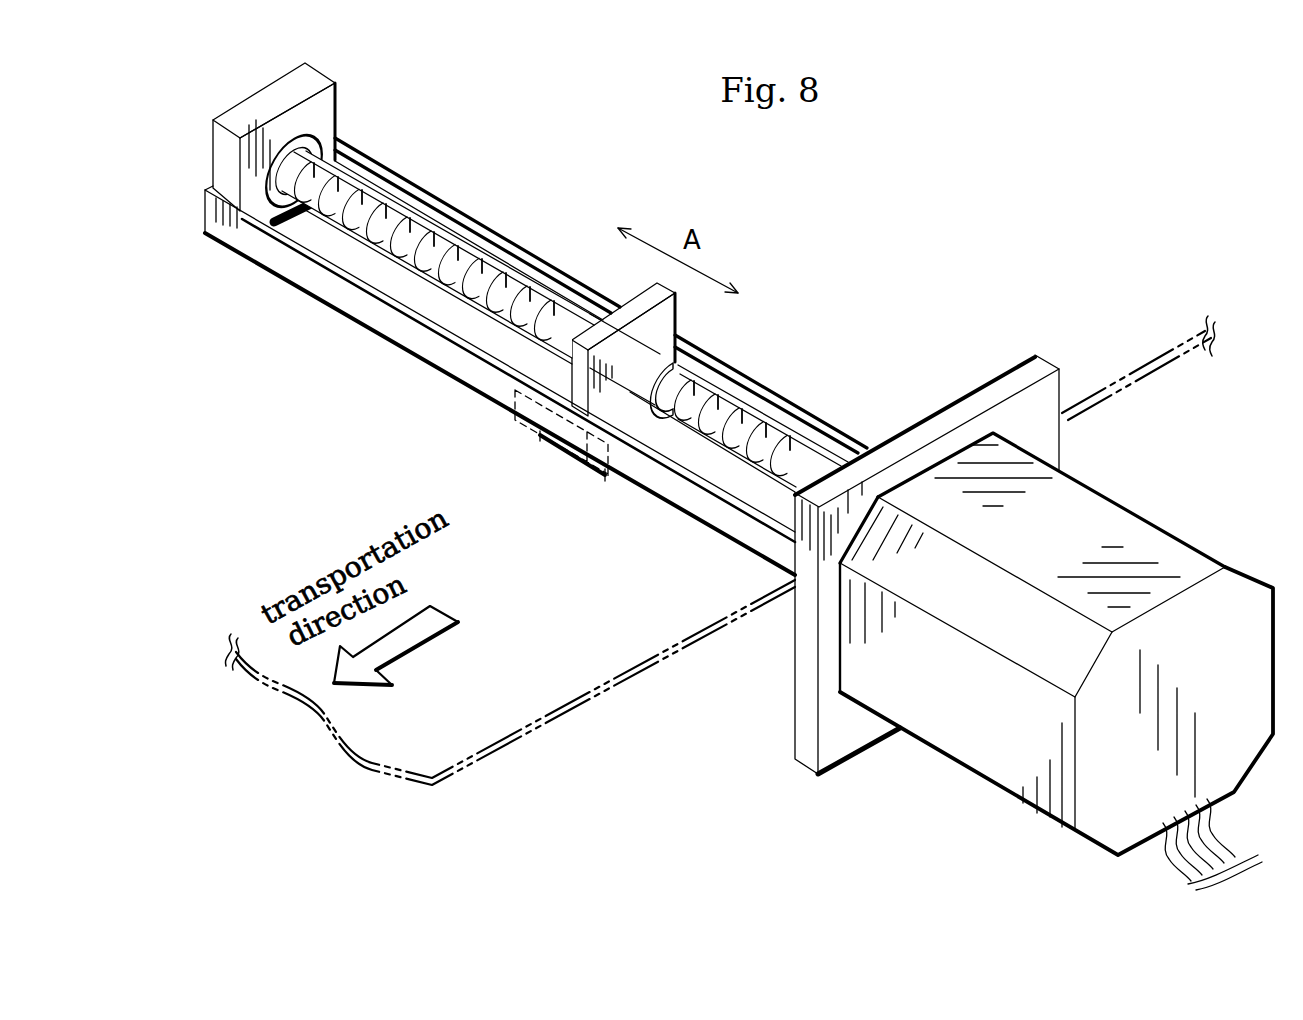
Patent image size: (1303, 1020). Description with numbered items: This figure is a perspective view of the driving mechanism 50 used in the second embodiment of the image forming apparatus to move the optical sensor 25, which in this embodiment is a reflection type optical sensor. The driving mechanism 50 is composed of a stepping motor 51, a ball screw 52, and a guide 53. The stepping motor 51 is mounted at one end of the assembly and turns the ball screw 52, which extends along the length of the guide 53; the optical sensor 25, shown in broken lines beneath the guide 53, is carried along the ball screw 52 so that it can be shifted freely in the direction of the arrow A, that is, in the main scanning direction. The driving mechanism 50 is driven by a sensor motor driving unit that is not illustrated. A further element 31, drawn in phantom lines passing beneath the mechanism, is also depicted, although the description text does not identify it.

The optical sensor 25 is at (585, 478).
The recording sheet 31 is at (567, 663).
The driving mechanism 50 is at (557, 175).
The stepping motor 51 is at (1087, 513).
The ball screw 52 is at (752, 385).
The guide 53 is at (444, 197).